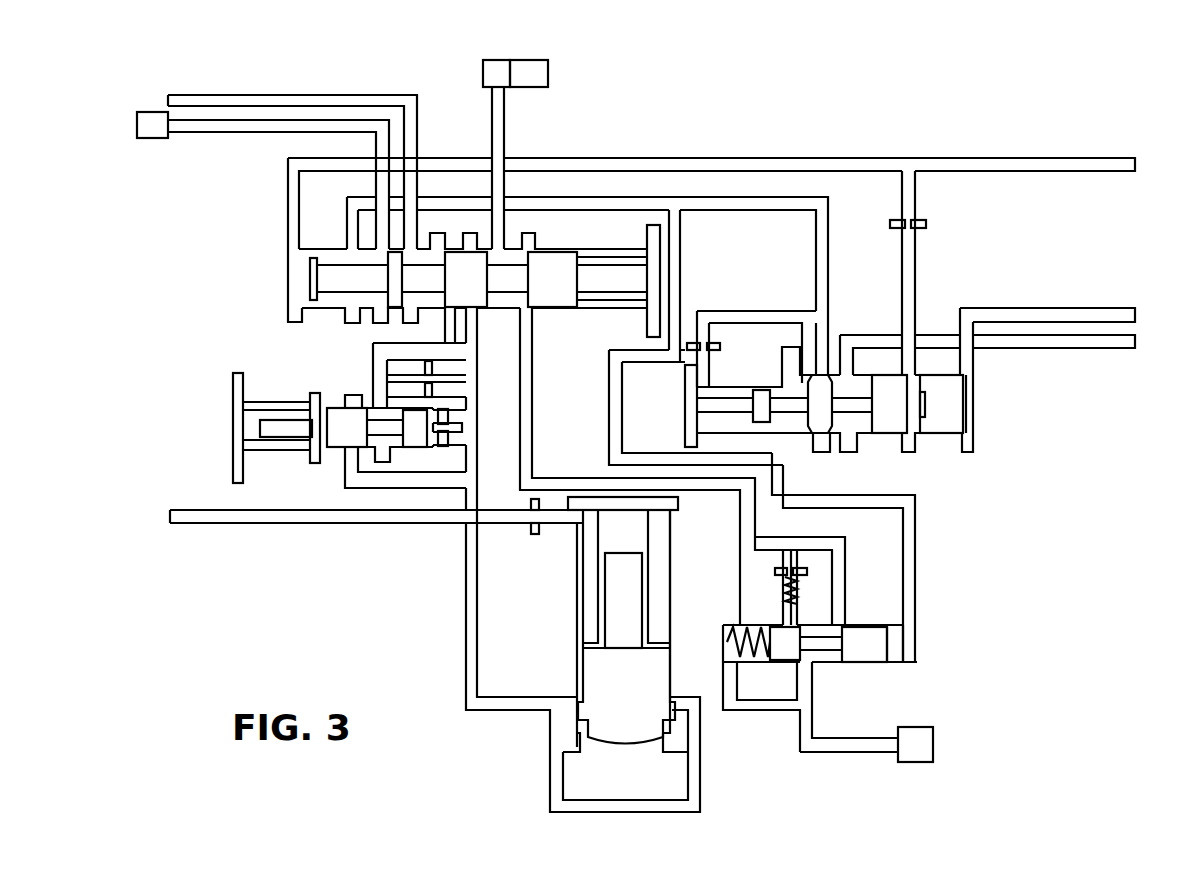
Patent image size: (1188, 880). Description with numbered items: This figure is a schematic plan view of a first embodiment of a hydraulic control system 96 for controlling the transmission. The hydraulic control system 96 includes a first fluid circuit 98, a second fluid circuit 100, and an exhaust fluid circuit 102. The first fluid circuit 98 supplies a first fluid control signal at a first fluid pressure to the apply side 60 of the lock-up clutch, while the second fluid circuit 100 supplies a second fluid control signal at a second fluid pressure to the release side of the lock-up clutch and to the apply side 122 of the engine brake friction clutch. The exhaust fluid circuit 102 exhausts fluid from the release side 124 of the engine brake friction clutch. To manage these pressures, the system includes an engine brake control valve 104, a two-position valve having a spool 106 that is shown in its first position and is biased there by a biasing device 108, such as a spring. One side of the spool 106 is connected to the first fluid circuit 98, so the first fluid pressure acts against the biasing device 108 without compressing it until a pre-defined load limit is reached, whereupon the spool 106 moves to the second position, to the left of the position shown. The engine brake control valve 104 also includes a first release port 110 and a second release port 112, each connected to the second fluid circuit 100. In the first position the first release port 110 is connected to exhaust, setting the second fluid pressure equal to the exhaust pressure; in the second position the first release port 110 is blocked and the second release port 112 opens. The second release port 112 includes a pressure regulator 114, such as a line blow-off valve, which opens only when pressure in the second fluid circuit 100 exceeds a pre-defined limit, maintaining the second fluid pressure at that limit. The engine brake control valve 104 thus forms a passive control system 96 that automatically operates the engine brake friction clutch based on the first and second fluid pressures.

The hydraulic control system 96 is at (1003, 106).
The first fluid circuit 98 is at (230, 133).
The second fluid circuit 100 is at (503, 118).
The exhaust fluid circuit 102 is at (825, 746).
The engine brake control valve 104 is at (860, 673).
The spool 106 is at (874, 643).
The biasing device 108 is at (745, 627).
The first release port 110 is at (835, 558).
The second release port 112 is at (783, 563).
The pressure regulator 114 is at (798, 593).
The apply side 60 is at (143, 134).
The apply side 122 is at (516, 84).
The release side 124 is at (902, 755).